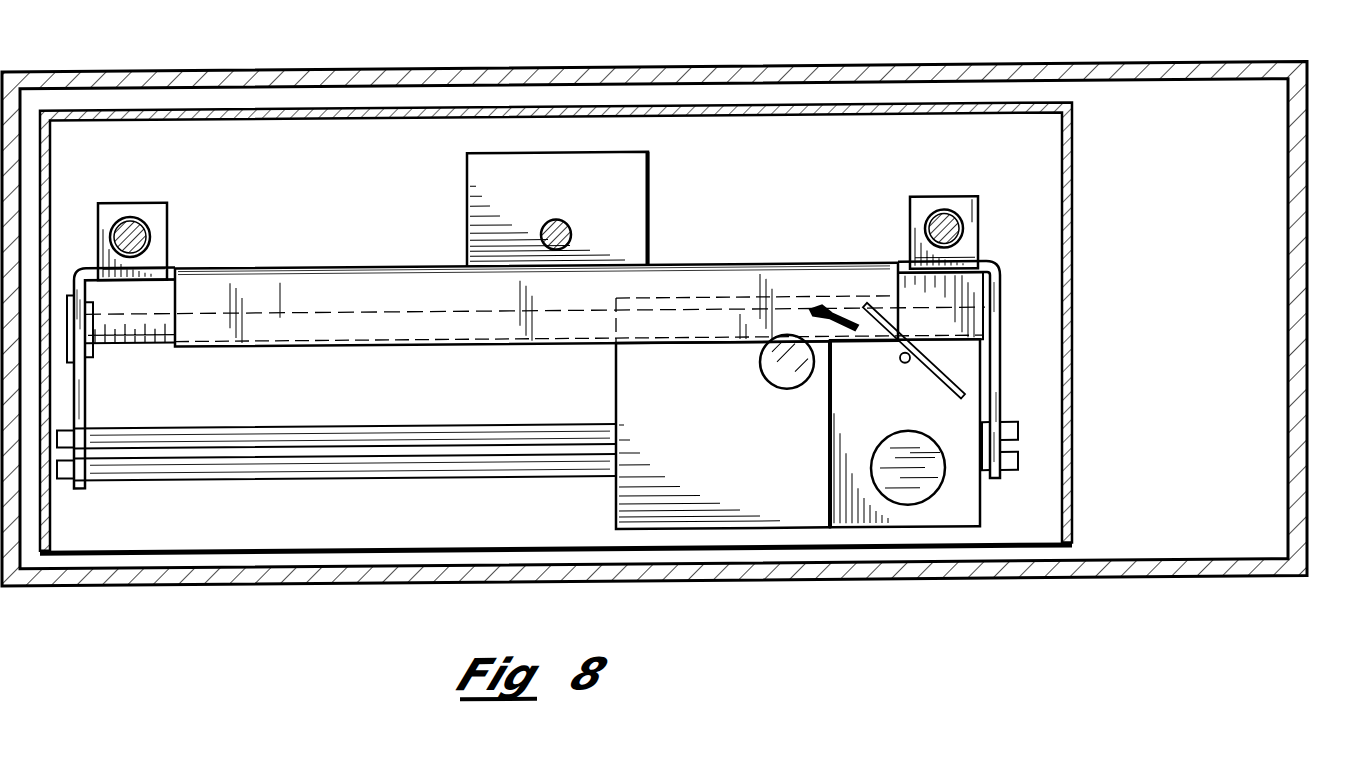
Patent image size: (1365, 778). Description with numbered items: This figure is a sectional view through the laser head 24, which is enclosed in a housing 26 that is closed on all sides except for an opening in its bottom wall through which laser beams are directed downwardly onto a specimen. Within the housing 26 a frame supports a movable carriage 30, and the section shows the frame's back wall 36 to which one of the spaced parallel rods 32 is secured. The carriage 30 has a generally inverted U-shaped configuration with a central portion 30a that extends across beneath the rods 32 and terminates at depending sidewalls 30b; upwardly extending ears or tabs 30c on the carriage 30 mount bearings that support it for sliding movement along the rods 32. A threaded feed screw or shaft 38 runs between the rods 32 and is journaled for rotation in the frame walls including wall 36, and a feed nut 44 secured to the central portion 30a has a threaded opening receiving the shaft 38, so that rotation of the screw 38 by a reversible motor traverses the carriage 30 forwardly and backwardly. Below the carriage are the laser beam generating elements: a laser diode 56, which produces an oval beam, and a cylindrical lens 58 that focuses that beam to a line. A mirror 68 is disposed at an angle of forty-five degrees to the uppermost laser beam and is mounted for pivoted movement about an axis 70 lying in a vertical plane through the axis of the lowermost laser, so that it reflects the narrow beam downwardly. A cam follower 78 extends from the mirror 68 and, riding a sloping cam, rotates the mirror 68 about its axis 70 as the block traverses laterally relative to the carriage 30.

The laser head 24 is at (904, 50).
The housing 26 is at (1307, 177).
The movable carriage 30 is at (535, 370).
The central portion 30a is at (364, 270).
The depending sidewalls 30b is at (86, 381).
The upwardly extending ears or tabs 30c is at (169, 214).
The spaced parallel rods 32 is at (131, 218).
The back wall 36 is at (1073, 327).
The threaded feed screw or shaft 38 is at (560, 232).
The feed nut 44 is at (648, 187).
The laser diode 56 is at (871, 479).
The cylindrical lens 58 is at (761, 372).
The mirror 68 is at (953, 400).
The mounting axis 70 is at (902, 370).
The cam follower 78 is at (826, 312).